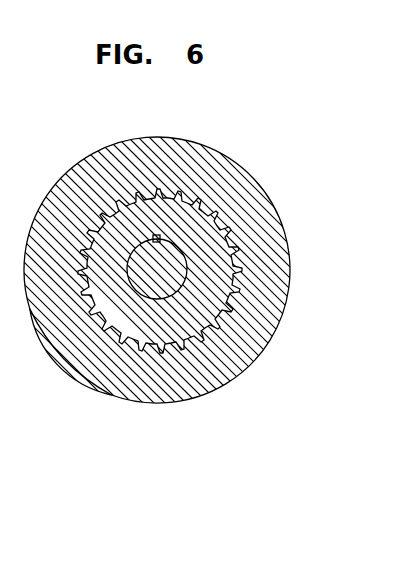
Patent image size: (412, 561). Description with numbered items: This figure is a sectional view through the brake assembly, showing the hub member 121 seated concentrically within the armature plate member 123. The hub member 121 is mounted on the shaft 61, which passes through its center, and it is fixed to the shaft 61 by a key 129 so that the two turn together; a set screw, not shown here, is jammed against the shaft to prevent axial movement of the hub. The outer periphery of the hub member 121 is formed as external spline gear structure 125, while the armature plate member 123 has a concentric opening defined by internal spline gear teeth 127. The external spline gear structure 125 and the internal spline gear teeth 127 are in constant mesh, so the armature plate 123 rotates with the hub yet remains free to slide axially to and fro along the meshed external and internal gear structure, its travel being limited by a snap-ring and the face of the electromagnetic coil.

The shaft 61 is at (153, 283).
The hub member 121 is at (206, 280).
The armature plate member 123 is at (255, 192).
The external spline gear structure 125 is at (232, 250).
The internal spline gear teeth 127 is at (240, 282).
The key 129 is at (156, 235).